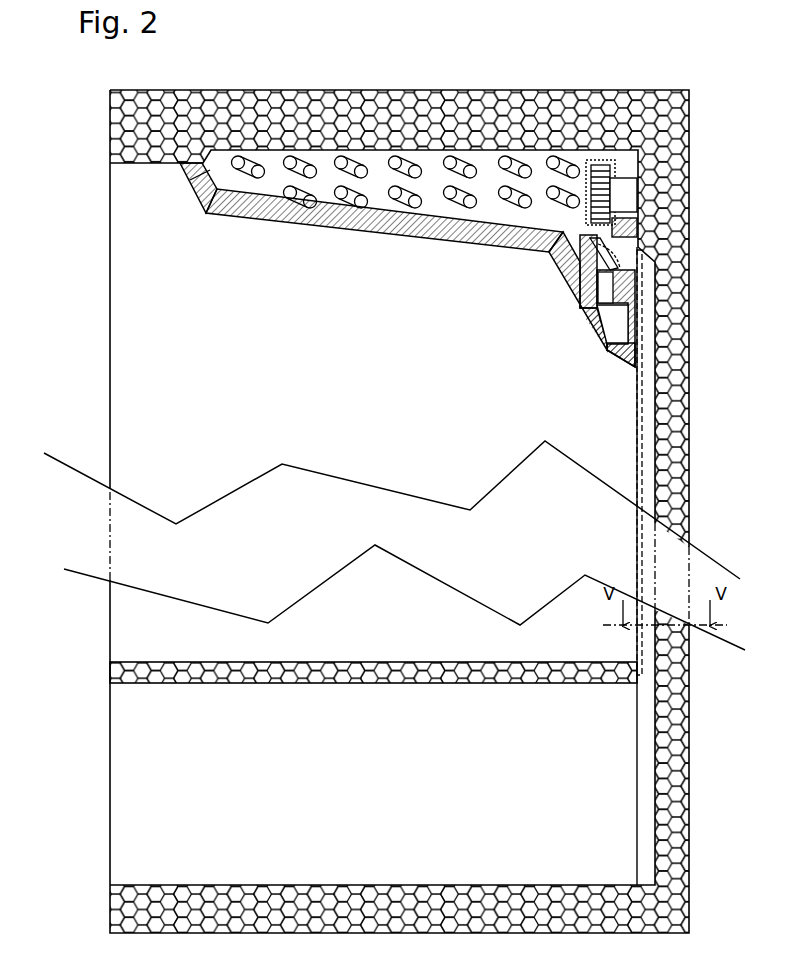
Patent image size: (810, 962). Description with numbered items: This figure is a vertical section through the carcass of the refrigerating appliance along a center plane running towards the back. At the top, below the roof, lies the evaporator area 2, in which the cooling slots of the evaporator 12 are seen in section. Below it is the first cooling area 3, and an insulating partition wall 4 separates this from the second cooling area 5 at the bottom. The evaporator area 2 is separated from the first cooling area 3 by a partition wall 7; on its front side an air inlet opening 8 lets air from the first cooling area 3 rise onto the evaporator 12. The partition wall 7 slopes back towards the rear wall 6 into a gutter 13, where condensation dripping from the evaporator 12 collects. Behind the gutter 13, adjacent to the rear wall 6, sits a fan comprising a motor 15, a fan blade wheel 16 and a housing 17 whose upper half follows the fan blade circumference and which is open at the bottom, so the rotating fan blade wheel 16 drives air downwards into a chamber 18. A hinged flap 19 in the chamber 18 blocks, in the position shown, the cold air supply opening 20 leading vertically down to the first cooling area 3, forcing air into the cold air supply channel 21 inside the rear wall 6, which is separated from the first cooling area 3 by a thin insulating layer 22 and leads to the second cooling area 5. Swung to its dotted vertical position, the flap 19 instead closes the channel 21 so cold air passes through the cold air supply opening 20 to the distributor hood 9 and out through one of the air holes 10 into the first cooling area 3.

The evaporator area 2 is at (430, 165).
The first cooling area 3 is at (347, 389).
The insulating partition wall 4 is at (358, 662).
The second cooling area 5 is at (361, 783).
The rear wall 6 is at (677, 413).
The partition wall 7 is at (263, 217).
The air inlet opening 8 is at (205, 188).
The distributor hood 9 is at (605, 372).
The air holes 10 is at (607, 332).
The evaporator 12 is at (363, 170).
The gutter 13 is at (575, 250).
The motor 15 is at (628, 193).
The fan blade wheel 16 is at (613, 174).
The housing 17 is at (603, 160).
The chamber 18 is at (610, 238).
The hinged flap 19 is at (593, 270).
The cold air supply opening 20 is at (612, 293).
The cold air supply channel 21 is at (650, 313).
The thin insulating layer 22 is at (635, 448).